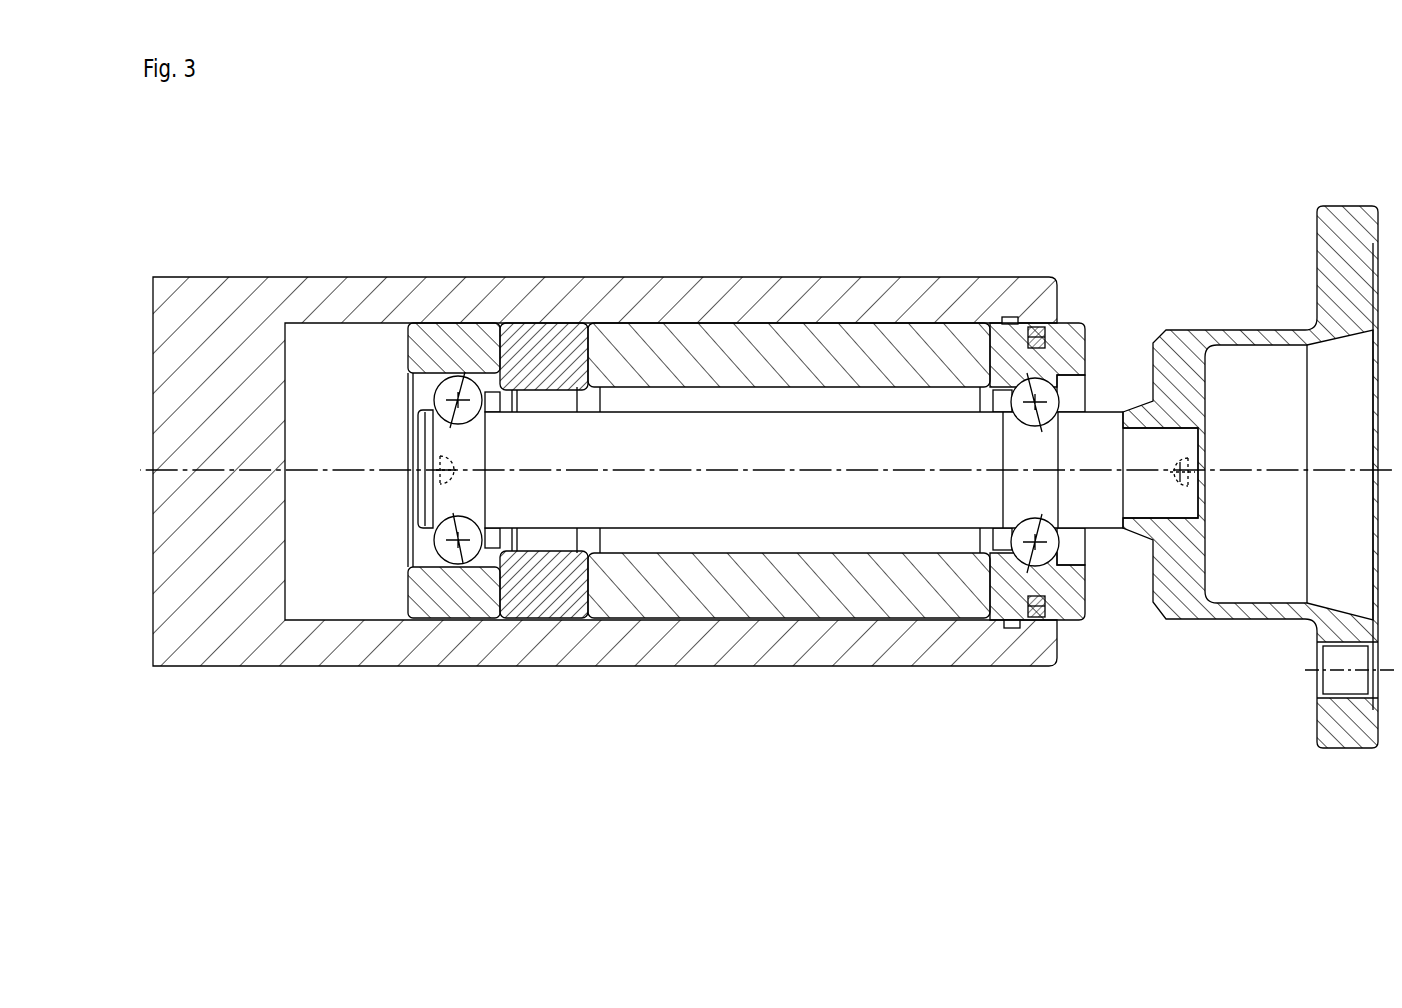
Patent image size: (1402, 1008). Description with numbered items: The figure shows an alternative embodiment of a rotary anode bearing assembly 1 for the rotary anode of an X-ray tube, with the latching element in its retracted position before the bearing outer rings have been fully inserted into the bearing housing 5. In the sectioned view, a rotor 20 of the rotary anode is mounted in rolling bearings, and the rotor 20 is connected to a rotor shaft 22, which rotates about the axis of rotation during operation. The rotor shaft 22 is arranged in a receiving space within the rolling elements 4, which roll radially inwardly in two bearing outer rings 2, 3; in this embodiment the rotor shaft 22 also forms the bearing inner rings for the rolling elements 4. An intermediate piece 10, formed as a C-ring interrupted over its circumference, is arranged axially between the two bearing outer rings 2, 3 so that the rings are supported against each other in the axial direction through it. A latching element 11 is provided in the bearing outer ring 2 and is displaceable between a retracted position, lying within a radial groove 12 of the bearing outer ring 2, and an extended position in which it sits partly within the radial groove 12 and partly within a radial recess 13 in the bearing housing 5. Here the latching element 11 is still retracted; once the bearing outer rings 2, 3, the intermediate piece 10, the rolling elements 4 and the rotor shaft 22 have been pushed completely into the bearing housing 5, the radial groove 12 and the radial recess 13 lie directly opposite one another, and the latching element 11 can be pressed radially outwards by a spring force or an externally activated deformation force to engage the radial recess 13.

The rotary anode bearing assembly 1 is at (880, 683).
The bearing outer ring 2 is at (1002, 360).
The bearing outer ring 3 is at (482, 370).
The rolling elements 4 is at (455, 372).
The bearing housing 5 is at (310, 300).
The intermediate piece 10 is at (543, 363).
The latching element 11 is at (1042, 620).
The radial groove 12 is at (1073, 620).
The radial recess 13 is at (1013, 628).
The rotor 20 is at (1183, 580).
The rotor shaft 22 is at (550, 508).